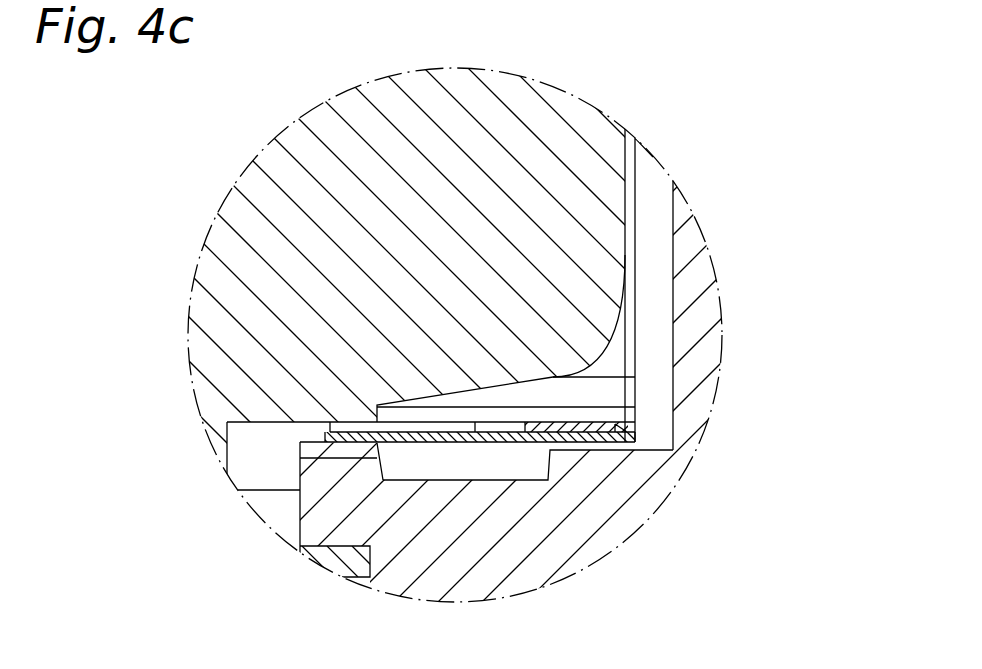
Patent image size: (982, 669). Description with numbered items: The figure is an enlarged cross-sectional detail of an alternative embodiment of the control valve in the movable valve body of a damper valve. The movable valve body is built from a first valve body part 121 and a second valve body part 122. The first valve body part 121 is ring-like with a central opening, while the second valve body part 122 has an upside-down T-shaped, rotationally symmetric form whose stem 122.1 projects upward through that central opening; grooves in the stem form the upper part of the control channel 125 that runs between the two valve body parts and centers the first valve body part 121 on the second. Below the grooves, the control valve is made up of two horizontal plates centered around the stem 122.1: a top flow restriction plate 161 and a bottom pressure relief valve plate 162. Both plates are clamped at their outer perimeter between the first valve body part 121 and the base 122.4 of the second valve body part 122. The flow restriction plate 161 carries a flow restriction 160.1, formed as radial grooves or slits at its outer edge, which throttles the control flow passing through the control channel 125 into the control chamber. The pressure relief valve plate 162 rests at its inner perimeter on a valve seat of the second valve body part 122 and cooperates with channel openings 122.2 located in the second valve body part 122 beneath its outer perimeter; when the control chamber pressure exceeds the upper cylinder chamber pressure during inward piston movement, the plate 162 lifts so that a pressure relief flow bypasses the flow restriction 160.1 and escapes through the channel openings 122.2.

The first valve body part 121 is at (513, 127).
The control channel 125 is at (652, 183).
The stem 122.1 is at (708, 320).
The second valve body part 122 is at (627, 514).
The channel openings 122.2 is at (313, 452).
The base 122.4 is at (527, 535).
The flow restriction 160.1 is at (347, 428).
The flow restriction plate 161 is at (587, 428).
The pressure relief valve plate 162 is at (597, 440).